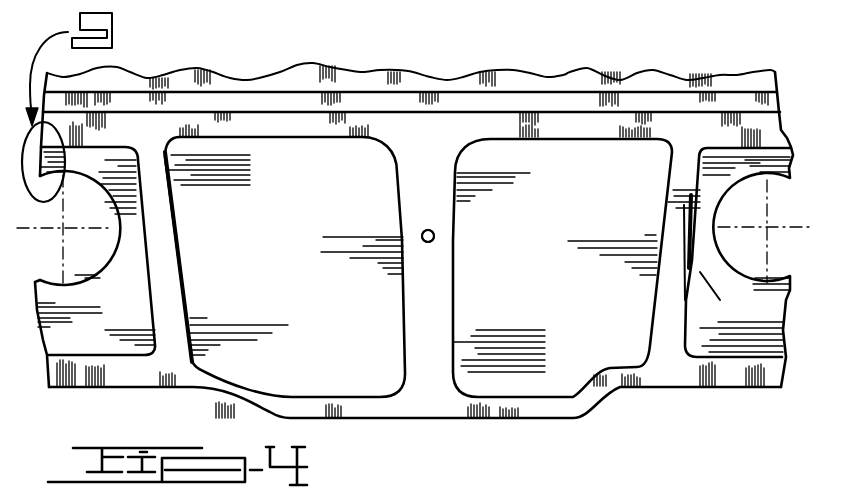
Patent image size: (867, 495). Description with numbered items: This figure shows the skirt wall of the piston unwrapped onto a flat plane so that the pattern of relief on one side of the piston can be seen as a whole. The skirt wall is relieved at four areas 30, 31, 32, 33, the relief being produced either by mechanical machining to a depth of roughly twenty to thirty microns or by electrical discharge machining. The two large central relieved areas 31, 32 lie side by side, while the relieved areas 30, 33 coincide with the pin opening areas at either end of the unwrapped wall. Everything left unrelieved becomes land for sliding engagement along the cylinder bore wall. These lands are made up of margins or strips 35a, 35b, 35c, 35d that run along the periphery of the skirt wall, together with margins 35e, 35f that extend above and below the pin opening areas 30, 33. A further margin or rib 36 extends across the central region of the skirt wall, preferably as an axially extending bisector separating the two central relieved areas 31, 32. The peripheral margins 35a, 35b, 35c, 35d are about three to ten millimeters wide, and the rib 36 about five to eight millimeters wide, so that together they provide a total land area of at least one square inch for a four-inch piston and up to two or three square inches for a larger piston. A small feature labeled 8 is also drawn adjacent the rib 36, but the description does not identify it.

The hole 8 is at (428, 243).
The relieved area 30 is at (123, 250).
The relieved area 31 is at (308, 175).
The relieved area 32 is at (610, 168).
The relieved area 33 is at (684, 210).
The margin 35a is at (402, 405).
The margin 35b is at (663, 312).
The margin 35c is at (160, 307).
The margin 35d is at (417, 128).
The margin 35e is at (103, 372).
The margin 35f is at (100, 130).
The rib 36 is at (430, 208).